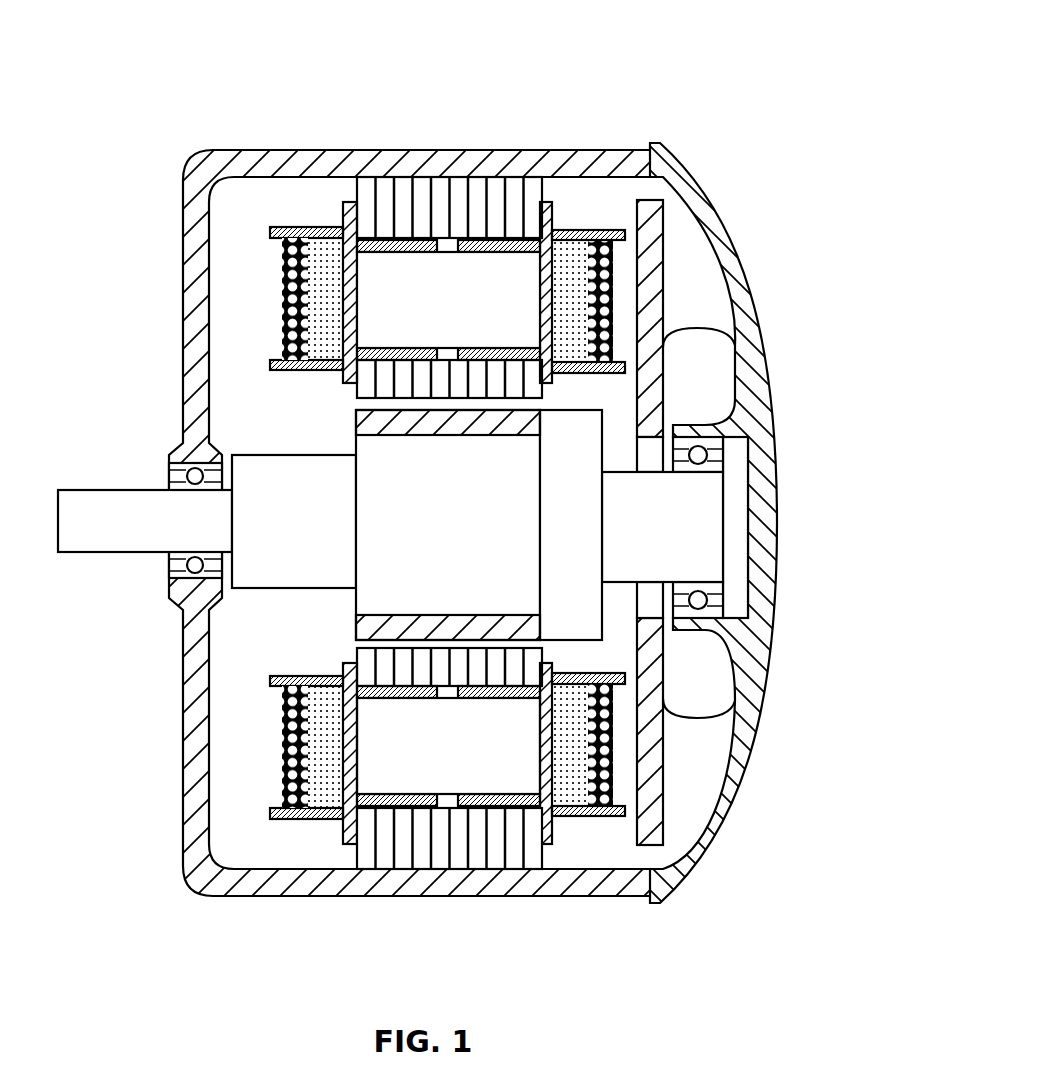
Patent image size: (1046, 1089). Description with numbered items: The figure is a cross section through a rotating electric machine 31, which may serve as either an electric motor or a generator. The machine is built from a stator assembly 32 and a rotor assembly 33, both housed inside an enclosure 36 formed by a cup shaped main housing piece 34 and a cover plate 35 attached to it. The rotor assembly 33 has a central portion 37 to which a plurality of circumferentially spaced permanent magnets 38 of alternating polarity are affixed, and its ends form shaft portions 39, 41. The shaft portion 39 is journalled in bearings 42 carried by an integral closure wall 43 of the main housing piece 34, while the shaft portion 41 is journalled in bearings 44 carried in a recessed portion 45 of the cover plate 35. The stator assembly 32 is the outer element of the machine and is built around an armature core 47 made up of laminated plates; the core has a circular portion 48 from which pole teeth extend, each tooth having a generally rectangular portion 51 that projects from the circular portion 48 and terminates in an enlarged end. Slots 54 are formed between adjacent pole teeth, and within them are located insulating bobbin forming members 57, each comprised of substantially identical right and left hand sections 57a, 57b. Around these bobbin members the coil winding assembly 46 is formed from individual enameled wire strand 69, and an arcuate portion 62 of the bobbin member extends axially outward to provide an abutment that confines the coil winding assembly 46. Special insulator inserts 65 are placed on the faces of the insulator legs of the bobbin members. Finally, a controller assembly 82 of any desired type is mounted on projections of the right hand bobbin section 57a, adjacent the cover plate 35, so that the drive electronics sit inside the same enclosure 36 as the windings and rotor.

The rotating electric machine 31 is at (562, 104).
The stator assembly 32 is at (668, 47).
The rotor assembly 33 is at (296, 605).
The main housing piece 34 is at (392, 152).
The cover plate 35 is at (765, 413).
The enclosure 36 is at (262, 790).
The central portion 37 is at (375, 535).
The permanent magnets 38 is at (357, 415).
The shaft portion 39 is at (125, 538).
The shaft portion 41 is at (698, 538).
The bearings 42 is at (177, 483).
The closure wall 43 is at (193, 703).
The bearings 44 is at (717, 467).
The recessed portion 45 is at (703, 505).
The coil winding assembly 46 is at (266, 333).
The armature core 47 is at (497, 184).
The circular portion 48 is at (458, 843).
The rectangular portions 51 is at (458, 666).
The slots 54 is at (430, 280).
The insulating bobbin forming members 57 is at (578, 216).
The right hand section 57a is at (612, 214).
The left hand section 57b is at (300, 222).
The arcuate portion 62 is at (302, 370).
The insulator inserts 65 is at (333, 312).
The enameled wire strand 69 is at (287, 305).
The controller assembly 82 is at (648, 350).